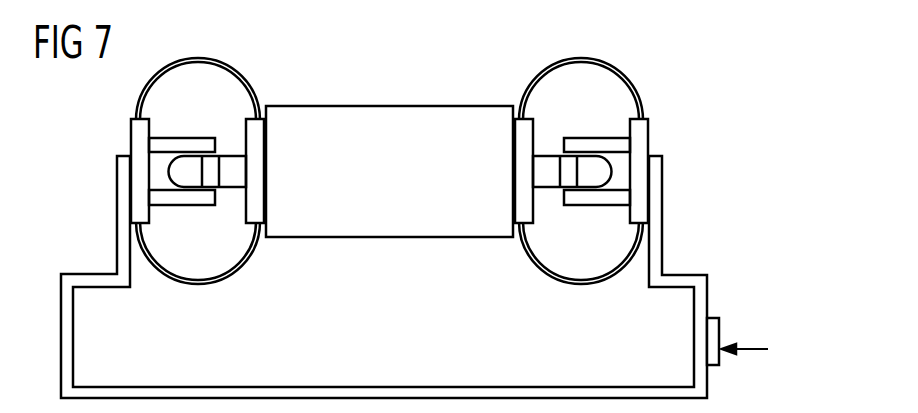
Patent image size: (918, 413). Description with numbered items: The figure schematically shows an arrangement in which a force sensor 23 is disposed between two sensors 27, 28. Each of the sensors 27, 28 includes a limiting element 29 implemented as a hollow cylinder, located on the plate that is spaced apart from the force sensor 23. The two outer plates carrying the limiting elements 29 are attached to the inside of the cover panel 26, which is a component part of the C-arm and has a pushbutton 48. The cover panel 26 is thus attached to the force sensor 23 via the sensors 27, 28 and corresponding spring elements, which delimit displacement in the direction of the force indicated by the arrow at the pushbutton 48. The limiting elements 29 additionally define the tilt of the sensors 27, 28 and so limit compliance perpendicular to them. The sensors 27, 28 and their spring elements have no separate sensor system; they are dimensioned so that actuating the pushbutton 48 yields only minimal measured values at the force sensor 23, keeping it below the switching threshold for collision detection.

The force sensor 23 is at (381, 106).
The cover panel 26 is at (687, 274).
The sensor 27 is at (197, 305).
The sensor 28 is at (590, 208).
The limiting element 29 is at (587, 138).
The pushbutton 48 is at (720, 330).